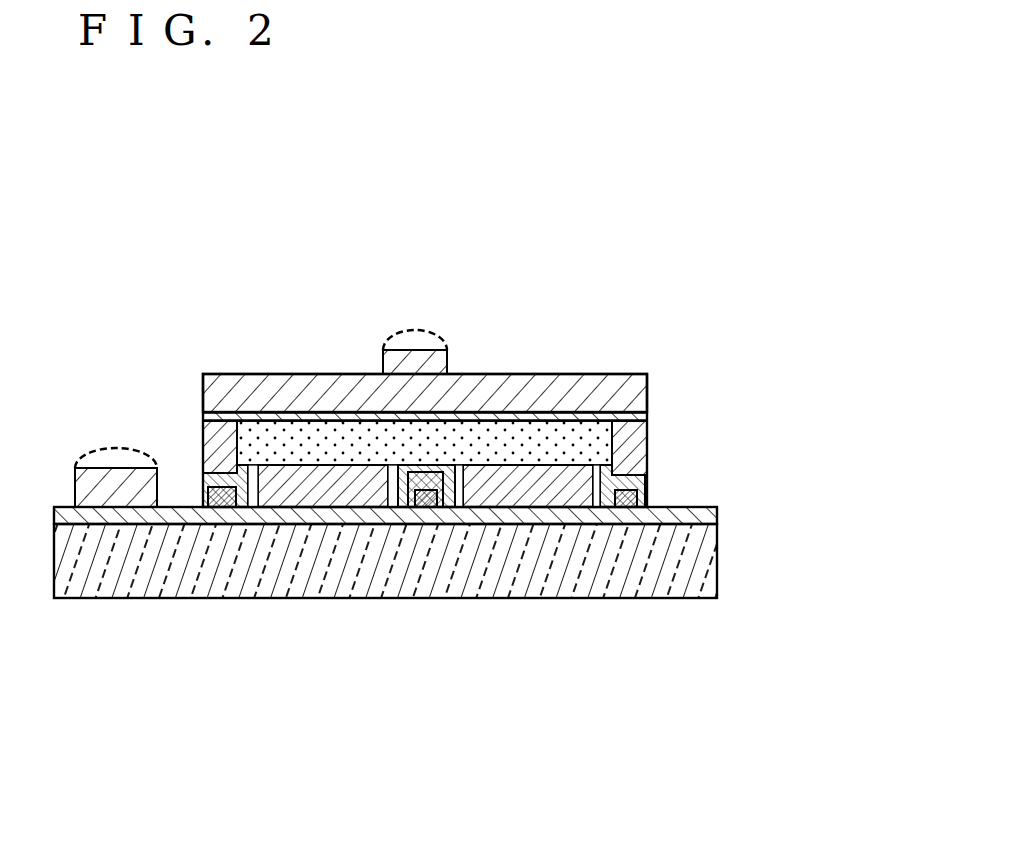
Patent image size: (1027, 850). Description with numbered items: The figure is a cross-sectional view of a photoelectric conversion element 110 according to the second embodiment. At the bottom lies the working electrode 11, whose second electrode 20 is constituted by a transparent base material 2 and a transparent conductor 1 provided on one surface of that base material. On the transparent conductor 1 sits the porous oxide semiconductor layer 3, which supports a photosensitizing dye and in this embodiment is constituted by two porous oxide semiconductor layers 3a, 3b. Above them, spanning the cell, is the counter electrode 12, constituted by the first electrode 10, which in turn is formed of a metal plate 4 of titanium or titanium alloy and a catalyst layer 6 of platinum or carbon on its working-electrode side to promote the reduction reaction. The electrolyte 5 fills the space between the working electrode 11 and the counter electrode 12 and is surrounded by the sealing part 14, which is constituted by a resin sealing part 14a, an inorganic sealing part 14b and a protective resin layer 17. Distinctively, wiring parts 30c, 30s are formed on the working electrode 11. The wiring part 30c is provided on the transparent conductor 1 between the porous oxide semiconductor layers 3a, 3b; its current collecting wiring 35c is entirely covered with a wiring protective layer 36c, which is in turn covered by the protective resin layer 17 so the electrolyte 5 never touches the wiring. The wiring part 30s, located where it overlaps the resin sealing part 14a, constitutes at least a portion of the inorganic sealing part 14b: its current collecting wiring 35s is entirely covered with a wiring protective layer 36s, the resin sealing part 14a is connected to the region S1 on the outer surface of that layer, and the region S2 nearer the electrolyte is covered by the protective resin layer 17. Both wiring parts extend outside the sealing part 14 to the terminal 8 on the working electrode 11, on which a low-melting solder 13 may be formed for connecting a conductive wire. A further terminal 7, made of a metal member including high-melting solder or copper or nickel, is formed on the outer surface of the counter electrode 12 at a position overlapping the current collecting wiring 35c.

The photoelectric conversion element 110 is at (737, 319).
The transparent conductor 1 is at (348, 527).
The transparent base material 2 is at (290, 523).
The second electrode 20 is at (385, 624).
The porous oxide semiconductor layer 3 is at (425, 603).
The porous oxide semiconductor layer 3a is at (372, 490).
The porous oxide semiconductor layer 3b is at (485, 493).
The working electrode 11 is at (385, 624).
The metal plate 4 is at (575, 398).
The electrolyte 5 is at (495, 437).
The catalyst layer 6 is at (545, 417).
The counter electrode 12 is at (425, 327).
The first electrode 10 is at (425, 327).
The terminal 7 is at (435, 346).
The terminal 8 is at (105, 485).
The solder 13 is at (88, 452).
The sealing part 14 is at (426, 540).
The resin sealing part 14a is at (215, 445).
The inorganic sealing part 14b is at (448, 613).
The wiring part 30s is at (417, 613).
The current collecting wiring 35s is at (241, 487).
The wiring protective layer 36s is at (215, 497).
The wiring part 30c is at (370, 371).
The current collecting wiring 35c is at (400, 465).
The wiring protective layer 36c is at (410, 468).
The protective resin layer 17 is at (385, 465).
The region S1 is at (208, 475).
The region S2 is at (245, 468).